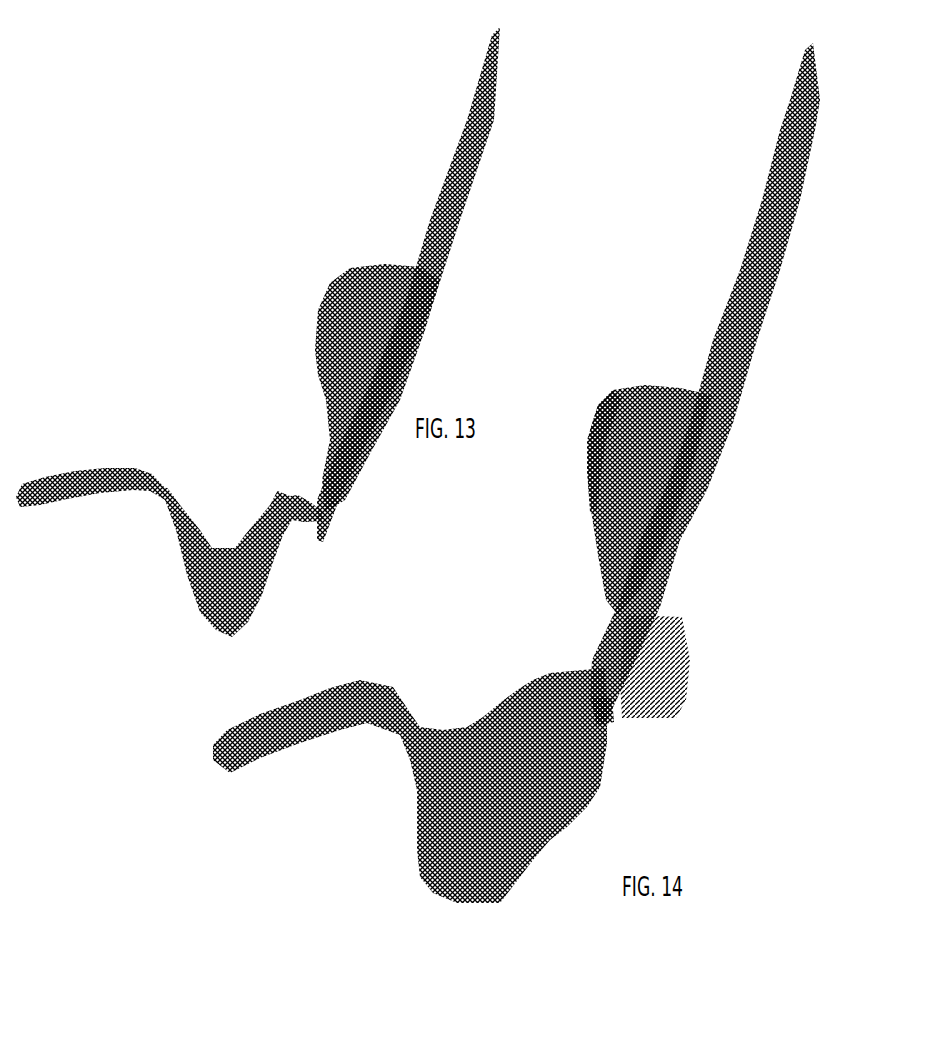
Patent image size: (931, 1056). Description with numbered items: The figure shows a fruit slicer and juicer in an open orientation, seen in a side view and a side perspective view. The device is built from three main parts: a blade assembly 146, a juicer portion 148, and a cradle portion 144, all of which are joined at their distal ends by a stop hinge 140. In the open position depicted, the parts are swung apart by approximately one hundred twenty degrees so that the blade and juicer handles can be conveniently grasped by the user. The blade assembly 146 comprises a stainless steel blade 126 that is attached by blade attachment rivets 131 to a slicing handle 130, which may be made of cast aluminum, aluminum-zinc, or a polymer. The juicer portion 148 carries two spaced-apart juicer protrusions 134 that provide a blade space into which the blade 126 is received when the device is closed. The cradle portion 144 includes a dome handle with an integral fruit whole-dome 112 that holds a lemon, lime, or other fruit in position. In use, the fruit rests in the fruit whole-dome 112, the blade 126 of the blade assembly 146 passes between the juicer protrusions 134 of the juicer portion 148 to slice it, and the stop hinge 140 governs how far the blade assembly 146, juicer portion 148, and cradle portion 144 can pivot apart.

In FIG. 14, the fruit whole-dome 112 is at (492, 705).
In FIG. 14, the blade 126 is at (758, 208).
In FIG. 14, the slicing handle 130 is at (637, 385).
In FIG. 14, the blade attachment rivets 131 is at (728, 460).
In FIG. 14, the juicer protrusions 134 is at (588, 445).
In FIG. 14, the stop hinge 140 is at (610, 723).
In FIG. 13, the cradle portion 144 is at (103, 457).
In FIG. 13, the blade assembly 146 is at (368, 258).
In FIG. 13, the juicer portion 148 is at (407, 292).